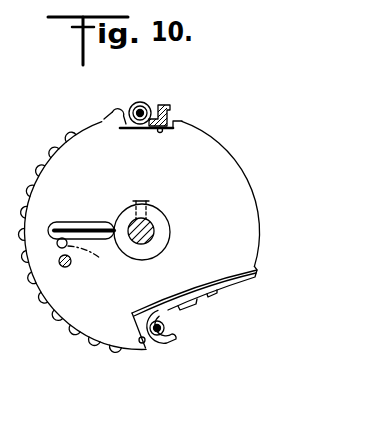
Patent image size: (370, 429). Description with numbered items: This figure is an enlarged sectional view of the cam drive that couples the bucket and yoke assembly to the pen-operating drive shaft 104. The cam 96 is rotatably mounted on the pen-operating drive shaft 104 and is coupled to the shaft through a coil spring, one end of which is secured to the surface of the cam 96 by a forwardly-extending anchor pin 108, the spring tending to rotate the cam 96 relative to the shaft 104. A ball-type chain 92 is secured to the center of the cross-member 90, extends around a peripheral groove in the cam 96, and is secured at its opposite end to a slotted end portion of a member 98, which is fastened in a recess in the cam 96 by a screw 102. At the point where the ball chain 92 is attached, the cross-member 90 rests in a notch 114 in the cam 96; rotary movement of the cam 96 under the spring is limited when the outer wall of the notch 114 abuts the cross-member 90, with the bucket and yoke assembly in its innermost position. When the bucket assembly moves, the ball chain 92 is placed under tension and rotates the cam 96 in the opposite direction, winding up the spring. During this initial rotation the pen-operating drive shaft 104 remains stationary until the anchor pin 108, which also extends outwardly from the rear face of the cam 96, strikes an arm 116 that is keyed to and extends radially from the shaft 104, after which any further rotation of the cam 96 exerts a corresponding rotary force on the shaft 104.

The cross-member 90 is at (168, 106).
The ball-type chain 92 is at (68, 134).
The cam 96 is at (237, 161).
The member 98 is at (178, 339).
The screw 102 is at (226, 292).
The pen-operating drive shaft 104 is at (153, 234).
The anchor pin 108 is at (72, 262).
The notch 114 is at (162, 133).
The arm 116 is at (78, 222).